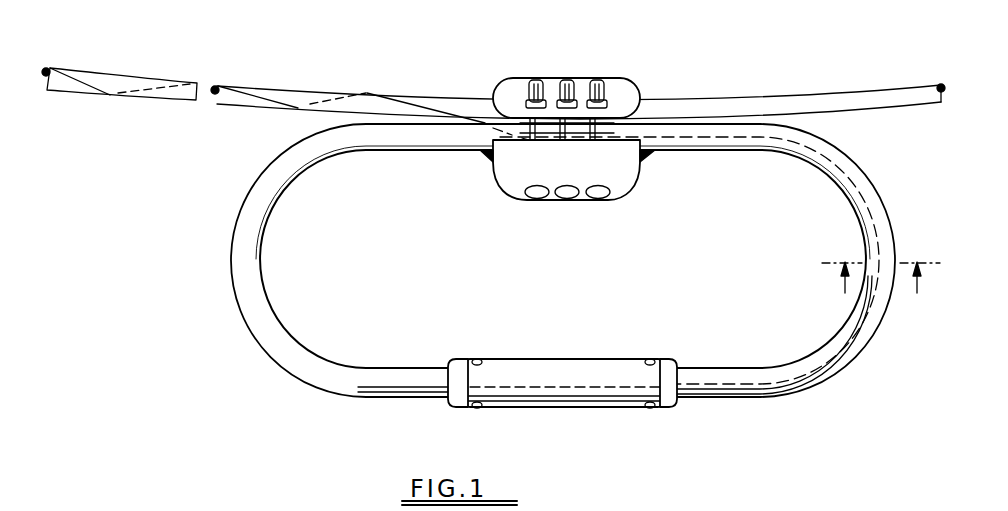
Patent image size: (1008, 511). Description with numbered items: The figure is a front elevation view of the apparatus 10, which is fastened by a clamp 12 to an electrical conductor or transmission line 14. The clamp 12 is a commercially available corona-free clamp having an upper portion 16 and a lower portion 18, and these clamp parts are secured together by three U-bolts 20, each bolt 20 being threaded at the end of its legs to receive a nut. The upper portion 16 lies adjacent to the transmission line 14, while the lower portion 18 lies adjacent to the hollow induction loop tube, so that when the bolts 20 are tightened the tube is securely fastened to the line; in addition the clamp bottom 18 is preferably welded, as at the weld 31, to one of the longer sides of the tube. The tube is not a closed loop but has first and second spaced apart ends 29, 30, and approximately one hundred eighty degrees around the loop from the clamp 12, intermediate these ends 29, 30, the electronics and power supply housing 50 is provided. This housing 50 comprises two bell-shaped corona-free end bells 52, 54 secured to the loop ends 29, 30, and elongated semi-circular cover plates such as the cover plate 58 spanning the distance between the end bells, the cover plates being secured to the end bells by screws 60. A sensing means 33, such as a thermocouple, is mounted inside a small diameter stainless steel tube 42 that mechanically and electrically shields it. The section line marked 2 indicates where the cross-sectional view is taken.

The apparatus 10 is at (448, 260).
The clamp 12 is at (596, 117).
The transmission line 14 is at (341, 91).
The upper portion of clamp 16 is at (642, 92).
The lower portion of clamp 18 is at (606, 200).
The U-bolts 20 is at (538, 80).
The first end of loop 29 is at (447, 382).
The second end of loop 30 is at (681, 370).
The weld 31 is at (491, 160).
The sensing means 33 is at (99, 71).
The stainless steel tube 42 is at (249, 93).
The electronics and power supply housing 50 is at (574, 379).
The end bell 52 is at (463, 398).
The end bell 54 is at (674, 402).
The cover plate 58 is at (565, 382).
The screws 60 is at (478, 359).
The section line 2- 2 is at (880, 280).